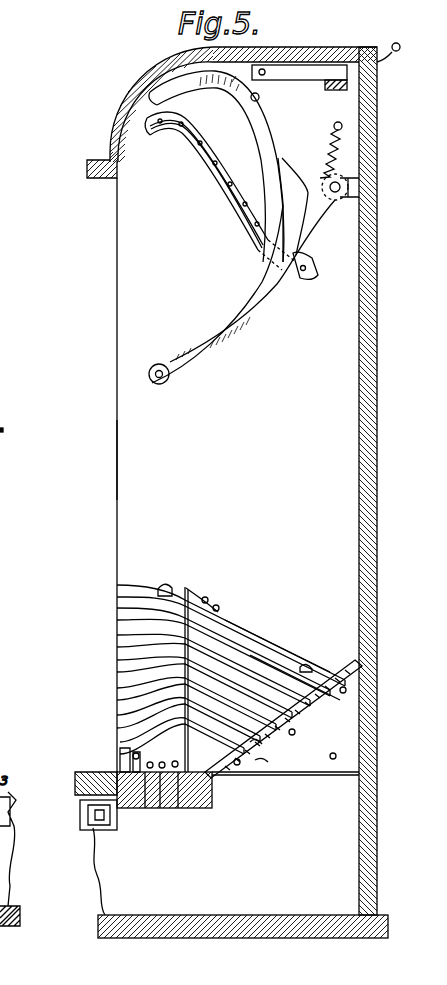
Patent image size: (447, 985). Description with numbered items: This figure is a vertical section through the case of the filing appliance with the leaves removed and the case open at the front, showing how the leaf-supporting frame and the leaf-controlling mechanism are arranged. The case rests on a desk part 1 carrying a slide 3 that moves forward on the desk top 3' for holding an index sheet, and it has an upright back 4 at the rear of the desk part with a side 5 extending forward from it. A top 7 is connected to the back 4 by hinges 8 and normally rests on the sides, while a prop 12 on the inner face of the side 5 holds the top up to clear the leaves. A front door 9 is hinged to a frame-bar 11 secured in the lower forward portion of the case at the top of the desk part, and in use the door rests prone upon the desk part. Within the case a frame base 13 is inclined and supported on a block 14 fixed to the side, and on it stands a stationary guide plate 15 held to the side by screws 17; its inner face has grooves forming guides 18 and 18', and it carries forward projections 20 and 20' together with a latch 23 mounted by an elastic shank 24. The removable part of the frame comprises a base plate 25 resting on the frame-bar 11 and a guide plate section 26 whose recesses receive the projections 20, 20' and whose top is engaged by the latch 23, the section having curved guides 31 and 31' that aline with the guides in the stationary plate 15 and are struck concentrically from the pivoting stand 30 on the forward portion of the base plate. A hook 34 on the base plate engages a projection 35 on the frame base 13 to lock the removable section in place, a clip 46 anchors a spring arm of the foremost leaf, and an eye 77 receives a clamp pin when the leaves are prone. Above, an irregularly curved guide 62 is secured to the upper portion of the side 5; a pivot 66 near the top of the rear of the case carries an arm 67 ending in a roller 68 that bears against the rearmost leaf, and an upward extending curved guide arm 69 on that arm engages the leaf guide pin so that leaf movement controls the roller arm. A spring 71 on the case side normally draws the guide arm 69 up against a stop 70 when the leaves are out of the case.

The desk part 1 is at (205, 938).
The slide 3 is at (82, 808).
The desk top 3′ is at (92, 815).
The upright back 4 is at (377, 430).
The side 5 is at (270, 476).
The top 7 is at (108, 123).
The hinges 8 is at (392, 51).
The front door 9 is at (78, 779).
The frame-bar 11 is at (212, 806).
The prop 12 is at (303, 72).
The frame base 13 is at (320, 700).
The block 14 is at (312, 777).
The guide plate 15 is at (298, 660).
The screws 17 is at (244, 616).
The guide 18 is at (258, 774).
The guide 18′ is at (262, 740).
The projection 20 is at (135, 694).
The projection 20′ is at (135, 636).
The latch 23 is at (163, 590).
The elastic shank 24 is at (200, 596).
The base plate 25 is at (143, 810).
The guide plate section 26 is at (130, 585).
The pivoting stand 30 is at (130, 745).
The guide 31 is at (120, 720).
The guide 31′ is at (130, 664).
The hook 34 is at (180, 810).
The projection 35 is at (220, 775).
The clip 46 is at (162, 810).
The curved guide 62 is at (236, 182).
The pivot 66 is at (340, 187).
The arm 67 is at (240, 312).
The roller 68 is at (156, 364).
The guide arm 69 is at (231, 93).
The stop 70 is at (259, 98).
The spring 71 is at (340, 147).
The eye 77 is at (120, 753).